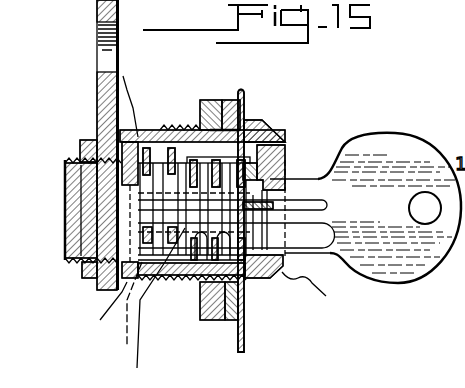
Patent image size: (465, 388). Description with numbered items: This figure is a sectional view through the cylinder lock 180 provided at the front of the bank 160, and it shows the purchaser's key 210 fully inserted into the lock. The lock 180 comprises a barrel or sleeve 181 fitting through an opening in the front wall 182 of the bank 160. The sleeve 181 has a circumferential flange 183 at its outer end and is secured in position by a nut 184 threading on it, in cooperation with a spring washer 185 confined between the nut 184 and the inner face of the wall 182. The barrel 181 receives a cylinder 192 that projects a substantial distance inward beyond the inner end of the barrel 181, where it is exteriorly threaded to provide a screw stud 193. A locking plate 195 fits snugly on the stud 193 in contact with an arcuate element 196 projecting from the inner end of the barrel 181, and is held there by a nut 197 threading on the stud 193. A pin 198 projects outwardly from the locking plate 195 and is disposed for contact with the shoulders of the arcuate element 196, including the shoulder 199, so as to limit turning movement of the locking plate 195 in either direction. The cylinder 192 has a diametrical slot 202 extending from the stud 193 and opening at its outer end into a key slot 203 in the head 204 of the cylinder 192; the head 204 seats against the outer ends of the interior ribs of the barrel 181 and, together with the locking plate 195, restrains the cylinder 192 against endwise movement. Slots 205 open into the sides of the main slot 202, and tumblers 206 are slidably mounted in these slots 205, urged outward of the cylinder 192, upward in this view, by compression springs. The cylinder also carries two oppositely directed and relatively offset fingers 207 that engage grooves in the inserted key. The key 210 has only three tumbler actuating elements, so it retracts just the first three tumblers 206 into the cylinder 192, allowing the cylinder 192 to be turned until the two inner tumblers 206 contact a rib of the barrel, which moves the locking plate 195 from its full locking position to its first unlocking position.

The bank 160 is at (236, 343).
The cylinder lock 180 is at (285, 133).
The barrel or sleeve 181 is at (266, 124).
The front wall 182 is at (245, 350).
The circumferential flange 183 is at (247, 300).
The nut 184 is at (201, 305).
The spring washer 185 is at (230, 128).
The cylinder 192 is at (148, 307).
The screw stud 193 is at (79, 180).
The locking plate 195 is at (102, 105).
The arcuate element 196 is at (116, 313).
The nut 197 is at (85, 283).
The pin 198 is at (78, 161).
The shoulder 199 is at (97, 309).
The diametrical slot 202 is at (165, 150).
The key slot 203 is at (321, 291).
The head 204 is at (328, 146).
The slots 205 is at (233, 243).
The tumblers 206 is at (142, 98).
The fingers 207 is at (273, 198).
The key 210 is at (398, 157).